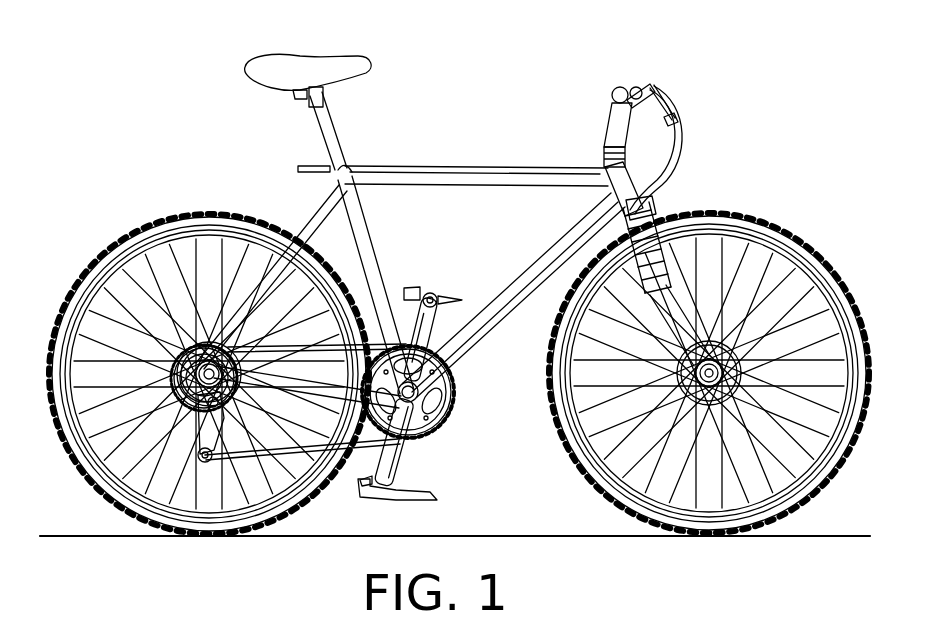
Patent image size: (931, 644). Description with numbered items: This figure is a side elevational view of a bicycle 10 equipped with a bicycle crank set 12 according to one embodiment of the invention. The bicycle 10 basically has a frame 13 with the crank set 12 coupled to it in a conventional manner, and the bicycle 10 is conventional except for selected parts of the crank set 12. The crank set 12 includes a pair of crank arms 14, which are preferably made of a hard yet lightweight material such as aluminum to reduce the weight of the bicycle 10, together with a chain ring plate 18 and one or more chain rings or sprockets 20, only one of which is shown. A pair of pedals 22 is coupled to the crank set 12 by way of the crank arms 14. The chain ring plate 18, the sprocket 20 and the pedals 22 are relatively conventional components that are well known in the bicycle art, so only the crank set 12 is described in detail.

The bicycle 10 is at (670, 64).
The bicycle crank set 12 is at (472, 445).
The frame 13 is at (462, 200).
The crank arm 14 is at (407, 296).
The chain ring plate 18 is at (432, 384).
The chain ring or sprocket 20 is at (360, 464).
The pedal 22 is at (446, 297).